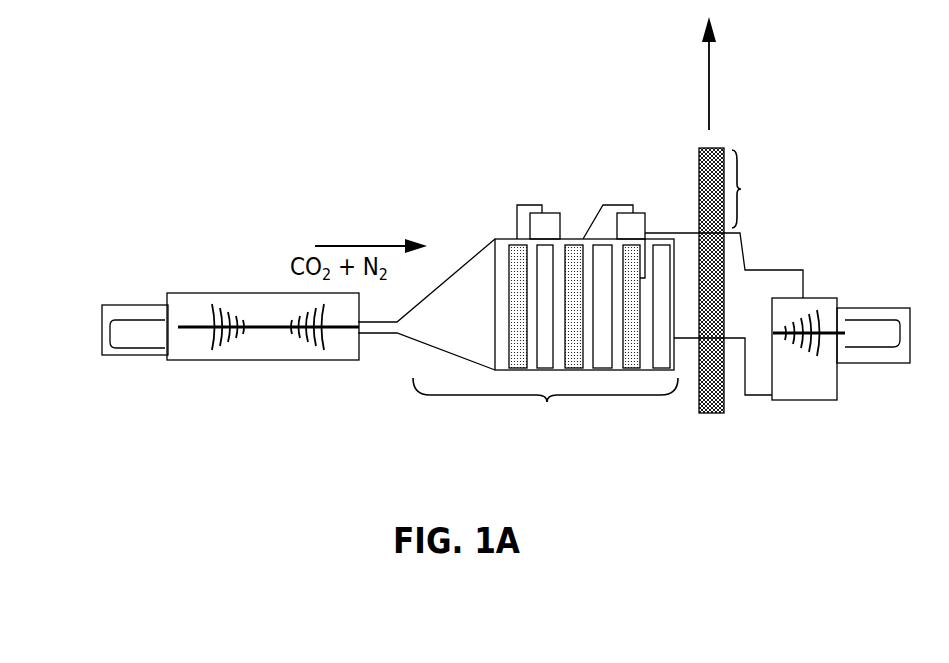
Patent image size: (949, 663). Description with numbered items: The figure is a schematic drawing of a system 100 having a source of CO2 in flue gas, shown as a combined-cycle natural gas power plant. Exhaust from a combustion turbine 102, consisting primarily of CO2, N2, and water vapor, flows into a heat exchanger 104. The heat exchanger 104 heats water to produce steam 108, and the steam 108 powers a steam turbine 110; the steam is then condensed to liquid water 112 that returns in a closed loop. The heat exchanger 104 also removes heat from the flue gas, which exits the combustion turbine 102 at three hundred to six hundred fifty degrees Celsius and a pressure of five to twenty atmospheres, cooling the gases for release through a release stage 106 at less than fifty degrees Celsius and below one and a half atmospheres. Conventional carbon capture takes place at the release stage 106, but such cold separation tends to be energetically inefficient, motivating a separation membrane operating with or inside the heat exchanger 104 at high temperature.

The system 100 is at (247, 99).
The combustion turbine 102 is at (223, 362).
The heat exchanger 104 is at (475, 331).
The release stage 106 is at (699, 173).
The steam 108 is at (773, 270).
The steam turbine 110 is at (832, 297).
The liquid water 112 is at (755, 395).